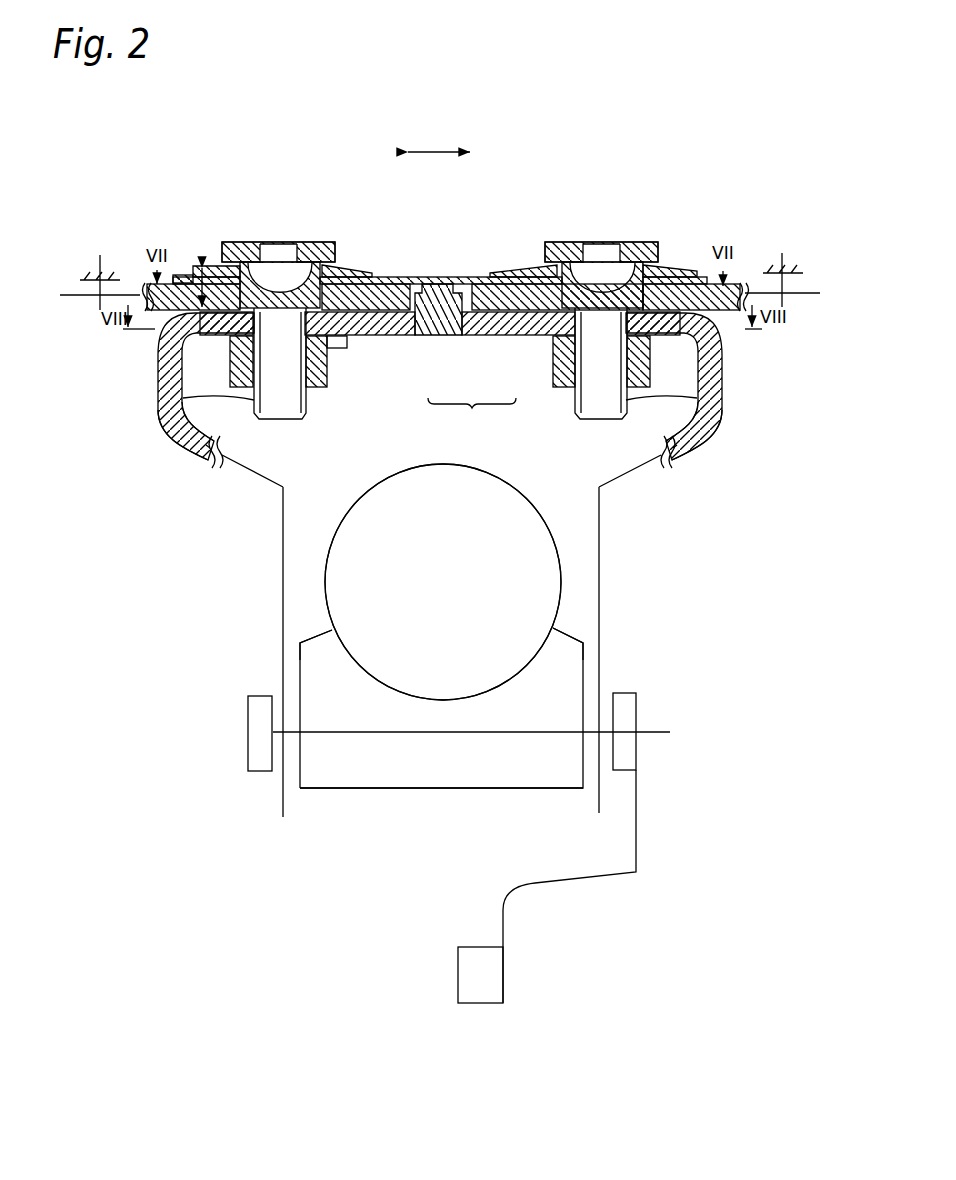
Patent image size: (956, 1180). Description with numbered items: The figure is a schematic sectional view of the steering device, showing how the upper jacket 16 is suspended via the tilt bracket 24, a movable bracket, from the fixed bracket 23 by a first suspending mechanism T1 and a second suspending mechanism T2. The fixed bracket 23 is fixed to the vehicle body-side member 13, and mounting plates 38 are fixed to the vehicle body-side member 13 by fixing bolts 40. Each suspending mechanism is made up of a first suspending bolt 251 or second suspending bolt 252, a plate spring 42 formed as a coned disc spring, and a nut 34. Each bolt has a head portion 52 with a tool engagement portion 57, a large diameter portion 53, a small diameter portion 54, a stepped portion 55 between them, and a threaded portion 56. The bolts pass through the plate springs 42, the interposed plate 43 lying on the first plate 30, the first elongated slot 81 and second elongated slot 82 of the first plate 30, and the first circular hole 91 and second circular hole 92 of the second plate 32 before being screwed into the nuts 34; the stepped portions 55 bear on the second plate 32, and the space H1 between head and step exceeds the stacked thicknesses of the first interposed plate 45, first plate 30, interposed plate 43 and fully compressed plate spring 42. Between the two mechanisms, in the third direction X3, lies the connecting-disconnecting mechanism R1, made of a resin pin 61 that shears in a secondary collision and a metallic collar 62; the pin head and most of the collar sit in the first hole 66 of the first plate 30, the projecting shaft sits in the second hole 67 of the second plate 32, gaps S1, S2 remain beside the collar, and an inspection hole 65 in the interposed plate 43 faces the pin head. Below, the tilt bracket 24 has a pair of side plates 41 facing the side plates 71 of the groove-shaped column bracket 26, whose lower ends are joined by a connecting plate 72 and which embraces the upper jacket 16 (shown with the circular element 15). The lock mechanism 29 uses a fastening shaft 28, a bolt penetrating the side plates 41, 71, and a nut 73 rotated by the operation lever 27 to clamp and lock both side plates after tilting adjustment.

The vehicle body-side member 13 is at (108, 268).
The spherical body 15 is at (357, 497).
The upper jacket 16 is at (527, 498).
The fixed bracket 23 is at (500, 282).
The tilt bracket 24 is at (282, 611).
The column bracket 26 is at (384, 791).
The operation lever 27 is at (500, 981).
The fastening shaft 28 is at (258, 750).
The lock mechanism 29 is at (670, 789).
The first plate 30 is at (522, 295).
The second plate 32 is at (333, 342).
The nut 34 is at (316, 389).
The mounting plate 38 is at (75, 292).
The fixing bolt 40 is at (92, 305).
The side plate 41 is at (283, 551).
The plate spring 42 is at (338, 268).
The interposed plate 43 is at (395, 290).
The first interposed plate 45 is at (362, 335).
The head portion 52 is at (226, 256).
The large diameter portion 53 is at (255, 265).
The small diameter portion 54 is at (268, 362).
The stepped portion 55 is at (233, 340).
The threaded portion 56 is at (180, 418).
The tool engagement portion 57 is at (280, 246).
The resin pin 61 is at (446, 338).
The metallic collar 62 is at (478, 315).
The inspection hole 65 is at (443, 283).
The first hole 66 is at (409, 315).
The second hole 67 is at (436, 337).
The side plate 71 is at (302, 703).
The connecting plate 72 is at (468, 791).
The nut 73 is at (636, 704).
The first elongated slot 81 is at (392, 280).
The second elongated slot 82 is at (508, 278).
The first circular hole 91 is at (298, 322).
The second circular hole 92 is at (582, 333).
The first suspending bolt 251 is at (237, 242).
The second suspending bolt 252 is at (645, 242).
The space H1 is at (200, 266).
The connecting-disconnecting mechanism R1 is at (472, 416).
The gap S1 is at (411, 300).
The gap S2 is at (466, 300).
The first suspending mechanism T1 is at (312, 242).
The second suspending mechanism T2 is at (560, 242).
The third direction X3 is at (443, 152).